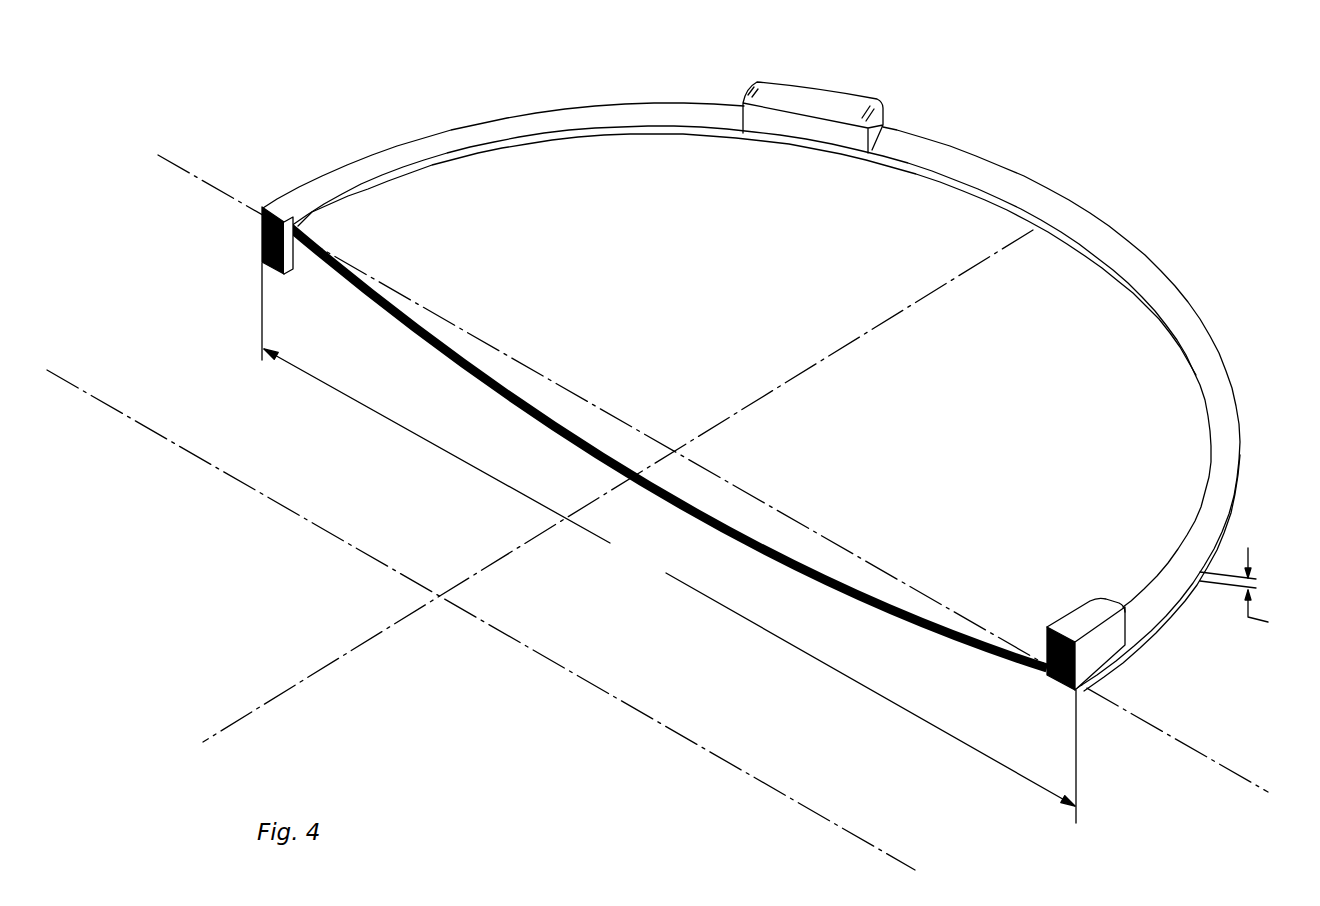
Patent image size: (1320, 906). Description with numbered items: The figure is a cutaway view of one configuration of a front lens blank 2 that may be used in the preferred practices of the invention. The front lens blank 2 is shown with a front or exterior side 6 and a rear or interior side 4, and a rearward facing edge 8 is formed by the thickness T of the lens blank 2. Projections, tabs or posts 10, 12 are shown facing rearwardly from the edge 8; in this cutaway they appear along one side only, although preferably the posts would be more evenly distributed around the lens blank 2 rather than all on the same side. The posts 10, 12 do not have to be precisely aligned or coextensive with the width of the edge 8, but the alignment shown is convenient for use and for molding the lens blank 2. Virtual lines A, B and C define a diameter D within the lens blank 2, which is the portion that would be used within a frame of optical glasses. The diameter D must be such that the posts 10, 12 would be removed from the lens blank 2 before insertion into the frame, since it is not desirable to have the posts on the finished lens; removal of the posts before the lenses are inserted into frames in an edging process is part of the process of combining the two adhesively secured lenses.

The front lens blank 2 is at (776, 373).
The rear or interior side 4 is at (776, 397).
The front or exterior side 6 is at (1230, 518).
The rearward facing edge 8 is at (1143, 640).
The post 10 is at (853, 90).
The post 12 is at (1102, 653).
The thickness T is at (1245, 592).
The virtual line A is at (897, 578).
The virtual line B is at (615, 487).
The virtual line C is at (515, 635).
The diameter D is at (618, 486).